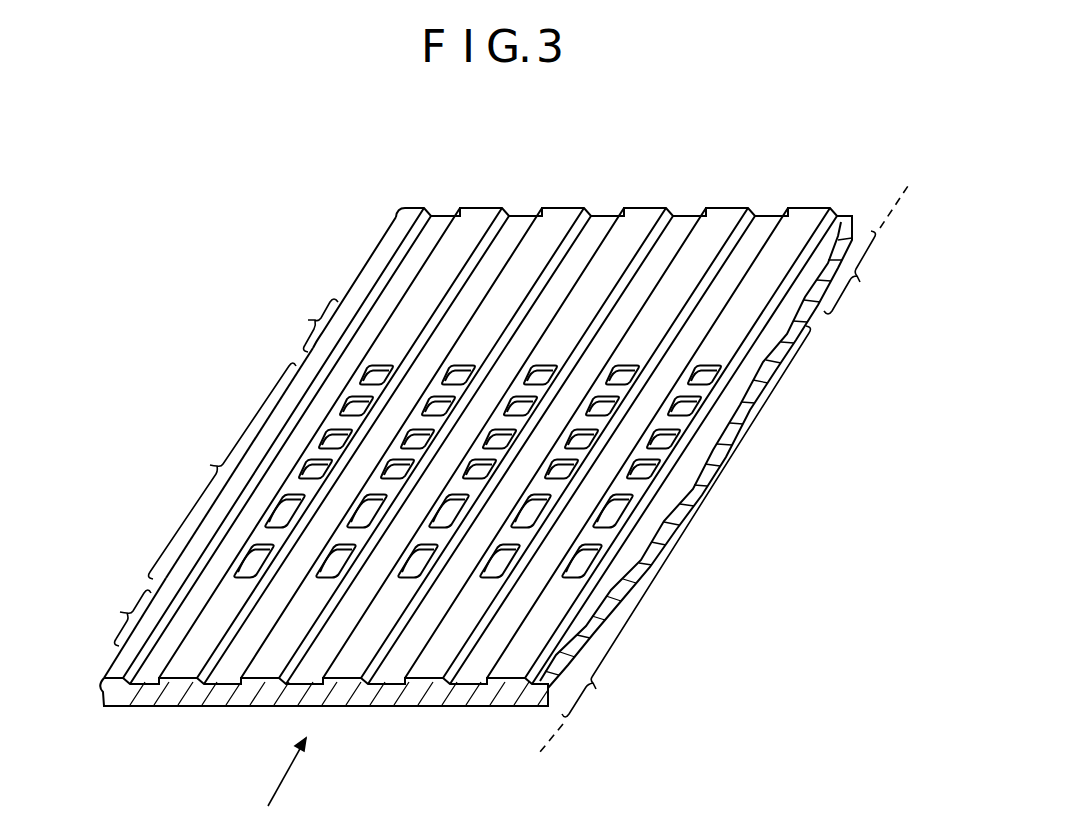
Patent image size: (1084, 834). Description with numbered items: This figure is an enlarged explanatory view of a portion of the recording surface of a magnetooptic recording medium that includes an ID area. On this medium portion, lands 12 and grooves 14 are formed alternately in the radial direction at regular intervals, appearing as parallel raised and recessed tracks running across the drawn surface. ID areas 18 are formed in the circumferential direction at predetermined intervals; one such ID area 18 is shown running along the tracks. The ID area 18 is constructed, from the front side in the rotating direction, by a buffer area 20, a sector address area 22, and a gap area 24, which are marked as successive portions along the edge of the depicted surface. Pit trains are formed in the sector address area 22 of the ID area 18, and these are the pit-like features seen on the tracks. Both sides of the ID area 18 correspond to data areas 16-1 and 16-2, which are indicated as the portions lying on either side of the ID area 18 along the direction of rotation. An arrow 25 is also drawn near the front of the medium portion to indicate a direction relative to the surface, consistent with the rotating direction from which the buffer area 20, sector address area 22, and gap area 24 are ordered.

The land 12 is at (813, 220).
The groove 14 is at (762, 236).
The data area 16-1 is at (873, 250).
The data area 16-2 is at (675, 539).
The ID area 18 is at (722, 480).
The buffer area 20 is at (308, 320).
The sector address area 22 is at (210, 465).
The gap area 24 is at (120, 612).
The flow direction arrow 25 is at (296, 769).